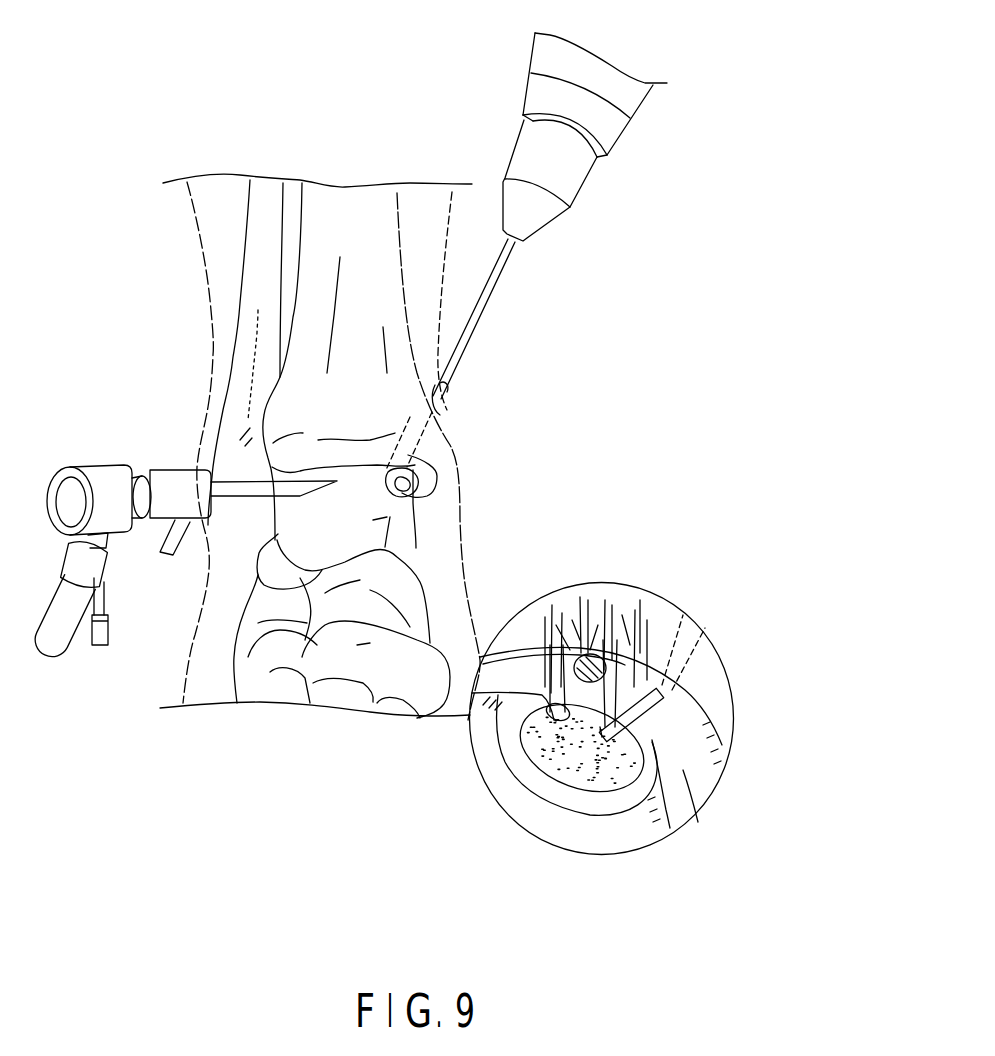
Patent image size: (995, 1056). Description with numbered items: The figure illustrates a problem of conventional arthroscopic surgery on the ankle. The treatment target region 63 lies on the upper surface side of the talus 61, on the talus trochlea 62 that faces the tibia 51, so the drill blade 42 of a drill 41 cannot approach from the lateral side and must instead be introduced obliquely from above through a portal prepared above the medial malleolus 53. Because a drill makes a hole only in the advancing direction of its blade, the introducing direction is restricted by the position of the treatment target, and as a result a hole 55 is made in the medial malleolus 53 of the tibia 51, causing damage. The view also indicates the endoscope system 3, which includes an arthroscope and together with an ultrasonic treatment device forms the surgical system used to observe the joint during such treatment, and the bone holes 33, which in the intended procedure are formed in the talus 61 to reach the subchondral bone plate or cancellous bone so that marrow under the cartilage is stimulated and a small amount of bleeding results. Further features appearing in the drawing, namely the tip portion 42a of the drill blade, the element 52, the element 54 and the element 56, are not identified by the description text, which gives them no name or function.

The endoscope system 3 is at (100, 463).
The drill 41 is at (573, 175).
The drill blade 42 is at (473, 322).
The needle tip 42a is at (700, 712).
The bone holes 33 is at (522, 742).
The tibia 51 is at (370, 240).
The fibula 52 is at (252, 298).
The medial malleolus 53 is at (437, 440).
The portal incision 54 is at (423, 483).
The hole 55 is at (457, 420).
The medial malleolus 56 is at (275, 415).
The talus 61 is at (393, 543).
The talus trochlea 62 is at (363, 510).
The treatment target region 63 is at (565, 760).